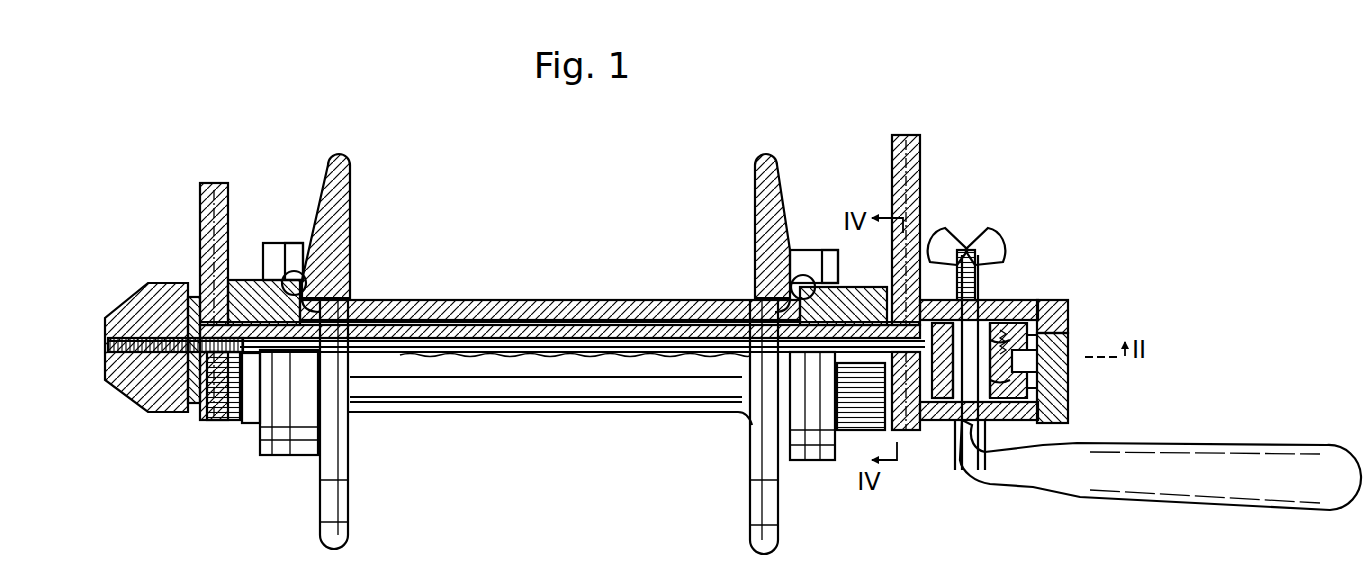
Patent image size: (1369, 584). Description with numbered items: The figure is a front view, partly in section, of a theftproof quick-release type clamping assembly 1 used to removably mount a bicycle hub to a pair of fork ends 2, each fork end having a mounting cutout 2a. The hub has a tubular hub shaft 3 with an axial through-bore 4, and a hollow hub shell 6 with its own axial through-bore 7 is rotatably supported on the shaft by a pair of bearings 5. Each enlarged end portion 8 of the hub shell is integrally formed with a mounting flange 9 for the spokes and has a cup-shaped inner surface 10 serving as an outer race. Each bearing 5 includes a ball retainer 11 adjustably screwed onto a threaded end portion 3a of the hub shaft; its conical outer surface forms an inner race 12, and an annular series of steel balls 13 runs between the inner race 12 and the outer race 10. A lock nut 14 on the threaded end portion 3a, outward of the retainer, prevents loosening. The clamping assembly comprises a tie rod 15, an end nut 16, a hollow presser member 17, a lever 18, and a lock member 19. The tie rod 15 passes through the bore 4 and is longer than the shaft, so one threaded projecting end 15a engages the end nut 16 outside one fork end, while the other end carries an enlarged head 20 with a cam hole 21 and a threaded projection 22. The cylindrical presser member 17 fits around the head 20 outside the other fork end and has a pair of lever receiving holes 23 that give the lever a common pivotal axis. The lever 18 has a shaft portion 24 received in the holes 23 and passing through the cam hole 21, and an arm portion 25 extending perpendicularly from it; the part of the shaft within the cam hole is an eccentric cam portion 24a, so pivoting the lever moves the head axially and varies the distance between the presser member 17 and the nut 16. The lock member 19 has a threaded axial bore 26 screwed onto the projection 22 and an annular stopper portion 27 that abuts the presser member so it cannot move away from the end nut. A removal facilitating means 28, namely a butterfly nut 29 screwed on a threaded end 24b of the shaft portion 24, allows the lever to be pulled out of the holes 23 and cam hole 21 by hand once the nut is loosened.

The quick-release type clamping assembly 1 is at (1140, 366).
The fork end 2 is at (200, 215).
The mounting cutout 2a is at (210, 420).
The hub shaft 3 is at (482, 325).
The threaded end portion 3a is at (258, 427).
The axial through-bore 4 is at (600, 346).
The bearing 5 is at (285, 255).
The hub shell 6 is at (418, 300).
The axial through-bore 7 is at (542, 335).
The enlarged end portion 8 is at (340, 240).
The mounting flange 9 is at (345, 160).
The cup-shaped inner surface 10 is at (335, 278).
The ball retainer 11 is at (243, 282).
The inner race 12 is at (297, 427).
The steel balls 13 is at (292, 272).
The lock nut 14 is at (233, 425).
The tie rod 15 is at (654, 352).
The projecting end 15a is at (173, 294).
The end nut 16 is at (135, 288).
The presser member 17 is at (1040, 292).
The lever 18 is at (1100, 500).
The lock member 19 is at (1072, 398).
The enlarged head 20 is at (1005, 300).
The cam hole 21 is at (945, 440).
The projection 22 is at (1070, 365).
The lever receiving holes 23 is at (972, 262).
The shaft portion 24 is at (968, 460).
The cam portion 24a is at (1008, 242).
The threaded end 24b is at (1008, 215).
The arm portion 25 is at (1180, 500).
The threaded axial bore 26 is at (1068, 330).
The stopper portion 27 is at (1062, 308).
The removal facilitating means 28 is at (1024, 238).
The butterfly nut 29 is at (950, 250).